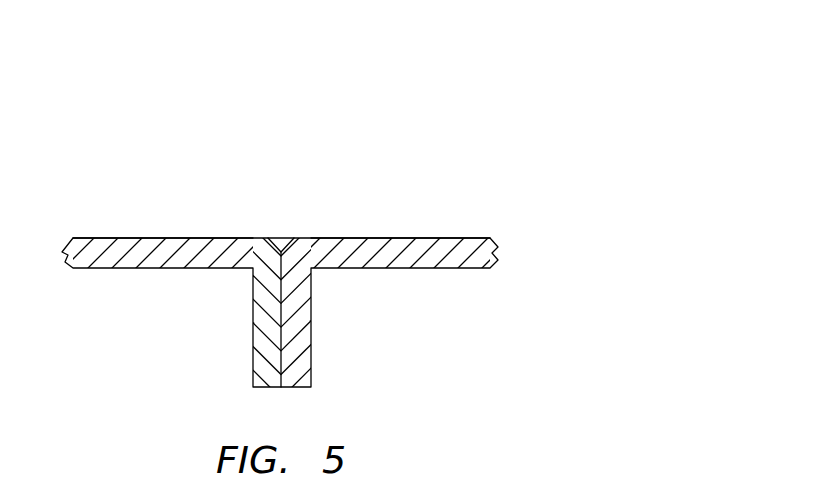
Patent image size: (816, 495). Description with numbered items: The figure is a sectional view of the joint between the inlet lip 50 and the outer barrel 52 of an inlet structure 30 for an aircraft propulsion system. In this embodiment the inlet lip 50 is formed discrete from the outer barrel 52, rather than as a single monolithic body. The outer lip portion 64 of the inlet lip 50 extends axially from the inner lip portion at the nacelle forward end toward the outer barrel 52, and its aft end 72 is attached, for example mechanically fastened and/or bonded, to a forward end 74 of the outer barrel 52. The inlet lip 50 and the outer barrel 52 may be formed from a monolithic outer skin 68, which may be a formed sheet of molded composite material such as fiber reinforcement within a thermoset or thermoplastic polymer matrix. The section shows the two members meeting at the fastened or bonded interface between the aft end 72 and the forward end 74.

The inlet structure 30 is at (422, 103).
The inlet lip 50 is at (103, 208).
The outer barrel 52 is at (444, 225).
The outer lip portion 64 is at (160, 238).
The monolithic outer skin 68 is at (385, 238).
The aft end of the outer lip portion 72 is at (295, 240).
The forward end of the outer barrel 74 is at (268, 240).